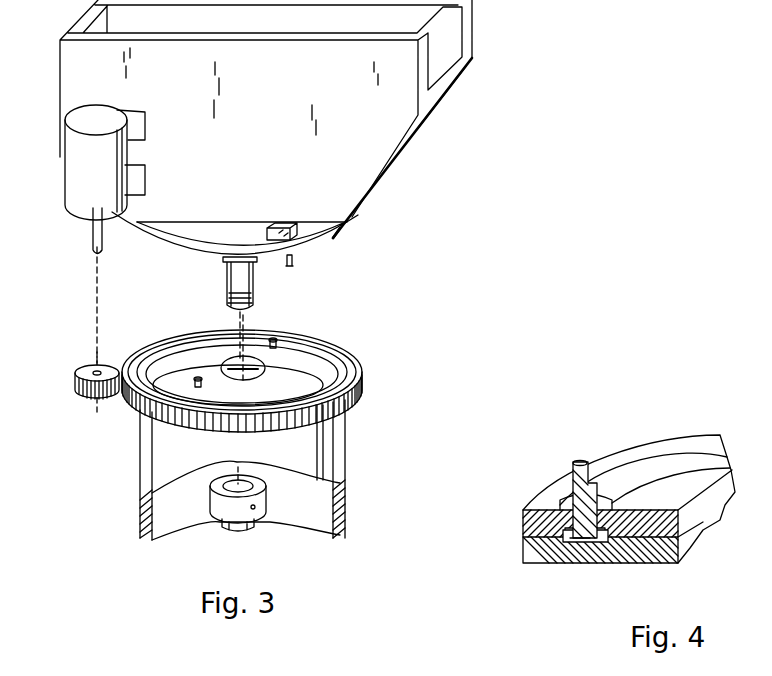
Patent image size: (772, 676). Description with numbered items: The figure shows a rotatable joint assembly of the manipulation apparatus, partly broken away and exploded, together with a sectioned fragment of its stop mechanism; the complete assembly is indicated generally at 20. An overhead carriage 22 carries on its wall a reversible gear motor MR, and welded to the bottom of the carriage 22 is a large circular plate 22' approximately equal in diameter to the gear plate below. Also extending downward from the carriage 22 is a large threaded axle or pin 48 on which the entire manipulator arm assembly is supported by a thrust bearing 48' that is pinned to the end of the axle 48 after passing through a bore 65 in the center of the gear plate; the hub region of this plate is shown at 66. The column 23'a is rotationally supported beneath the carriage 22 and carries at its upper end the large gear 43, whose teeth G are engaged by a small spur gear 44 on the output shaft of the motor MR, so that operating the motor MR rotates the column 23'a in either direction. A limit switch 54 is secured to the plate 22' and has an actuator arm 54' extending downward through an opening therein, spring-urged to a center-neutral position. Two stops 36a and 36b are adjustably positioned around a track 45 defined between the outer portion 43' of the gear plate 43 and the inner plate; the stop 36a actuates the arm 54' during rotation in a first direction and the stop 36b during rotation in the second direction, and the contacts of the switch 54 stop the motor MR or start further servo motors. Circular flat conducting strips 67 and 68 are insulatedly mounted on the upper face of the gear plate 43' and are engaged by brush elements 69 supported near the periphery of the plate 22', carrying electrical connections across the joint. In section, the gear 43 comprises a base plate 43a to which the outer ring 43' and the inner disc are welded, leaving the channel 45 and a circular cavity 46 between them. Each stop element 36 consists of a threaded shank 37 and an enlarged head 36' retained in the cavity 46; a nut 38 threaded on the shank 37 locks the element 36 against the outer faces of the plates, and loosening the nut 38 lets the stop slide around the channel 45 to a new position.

In FIG. 3, the hopper assembly 20 is at (432, 197).
In FIG. 3, the overhead carriage 22 is at (402, 148).
In FIG. 3, the circular plate 22' is at (375, 222).
In FIG. 3, the reversible gear motor MR is at (152, 235).
In FIG. 3, the limit switch 54 is at (294, 213).
In FIG. 3, the actuator arm 54' is at (314, 260).
In FIG. 3, the brush elements 69 is at (152, 248).
In FIG. 3, the hub 66 is at (257, 278).
In FIG. 3, the threaded axle or pin 48 is at (214, 286).
In FIG. 3, the spur gear 43 is at (250, 370).
In FIG. 4, the spur gear 43 is at (596, 508).
In FIG. 3, the gear teeth G is at (362, 385).
In FIG. 3, the track or channel 45 is at (192, 347).
In FIG. 4, the track or channel 45 is at (650, 475).
In FIG. 3, the conducting strip 67 is at (155, 347).
In FIG. 3, the conducting strip 68 is at (158, 347).
In FIG. 3, the bore 65 is at (258, 368).
In FIG. 3, the stop 36a is at (276, 344).
In FIG. 3, the stop 36b is at (200, 390).
In FIG. 3, the small spur gear 44 is at (87, 398).
In FIG. 3, the column 23'a is at (272, 470).
In FIG. 3, the thrust bearing 48' is at (252, 516).
In FIG. 4, the outer ring 43' is at (625, 468).
In FIG. 4, the base plate 43a is at (532, 565).
In FIG. 4, the threaded shank 37 is at (570, 486).
In FIG. 4, the nut 38 is at (565, 502).
In FIG. 4, the circular cavity 46 is at (587, 565).
In FIG. 4, the stop element 36 is at (594, 475).
In FIG. 4, the head 36' is at (562, 583).